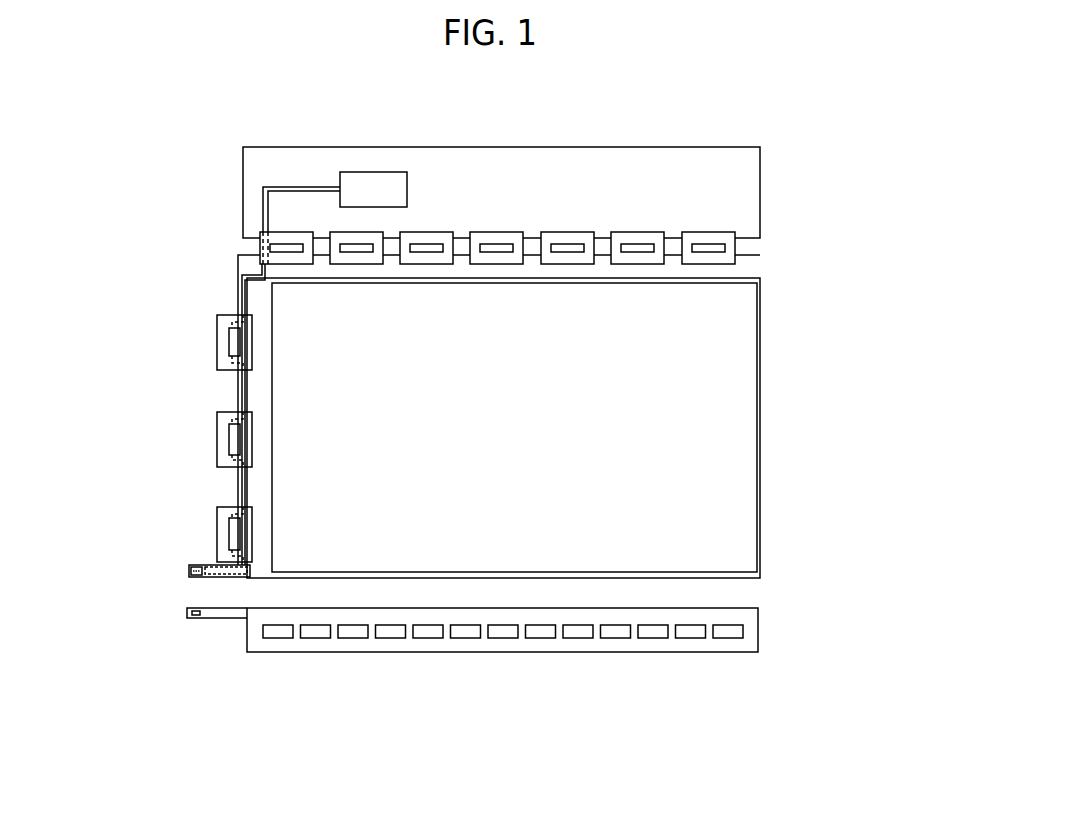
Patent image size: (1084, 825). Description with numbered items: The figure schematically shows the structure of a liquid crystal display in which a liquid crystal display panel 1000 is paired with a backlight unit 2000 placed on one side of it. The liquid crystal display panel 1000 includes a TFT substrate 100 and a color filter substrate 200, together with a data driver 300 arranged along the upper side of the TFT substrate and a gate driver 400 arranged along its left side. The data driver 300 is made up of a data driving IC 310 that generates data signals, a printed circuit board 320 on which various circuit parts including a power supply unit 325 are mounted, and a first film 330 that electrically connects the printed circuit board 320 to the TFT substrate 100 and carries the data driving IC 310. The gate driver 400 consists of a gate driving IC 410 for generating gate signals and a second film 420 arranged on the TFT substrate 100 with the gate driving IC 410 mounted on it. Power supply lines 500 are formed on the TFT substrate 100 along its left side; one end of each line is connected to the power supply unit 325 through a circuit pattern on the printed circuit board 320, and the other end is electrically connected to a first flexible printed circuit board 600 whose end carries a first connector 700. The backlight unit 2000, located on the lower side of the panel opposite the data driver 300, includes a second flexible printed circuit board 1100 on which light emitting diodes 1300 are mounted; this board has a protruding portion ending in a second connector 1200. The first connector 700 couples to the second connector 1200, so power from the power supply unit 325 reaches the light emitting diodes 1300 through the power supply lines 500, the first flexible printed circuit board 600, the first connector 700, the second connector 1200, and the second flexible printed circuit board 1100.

The thin film transistor substrate 100 is at (750, 275).
The color filter substrate 200 is at (750, 350).
The data driver 300 is at (847, 160).
The data driving IC 310 is at (707, 243).
The printed circuit board 320 is at (750, 170).
The power supply unit 325 is at (372, 180).
The first film 330 is at (738, 247).
The gate driver 400 is at (119, 315).
The gate driving IC 410 is at (230, 352).
The second film 420 is at (218, 320).
The power supply lines 500 is at (238, 292).
The first flexible printed circuit board 600 is at (185, 569).
The first connector 700 is at (196, 580).
The liquid crystal display panel 1000 is at (780, 465).
The second flexible printed circuit board 1100 is at (271, 645).
The second connector 1200 is at (183, 618).
The light emitting diodes 1300 is at (355, 640).
The backlight unit 2000 is at (772, 635).